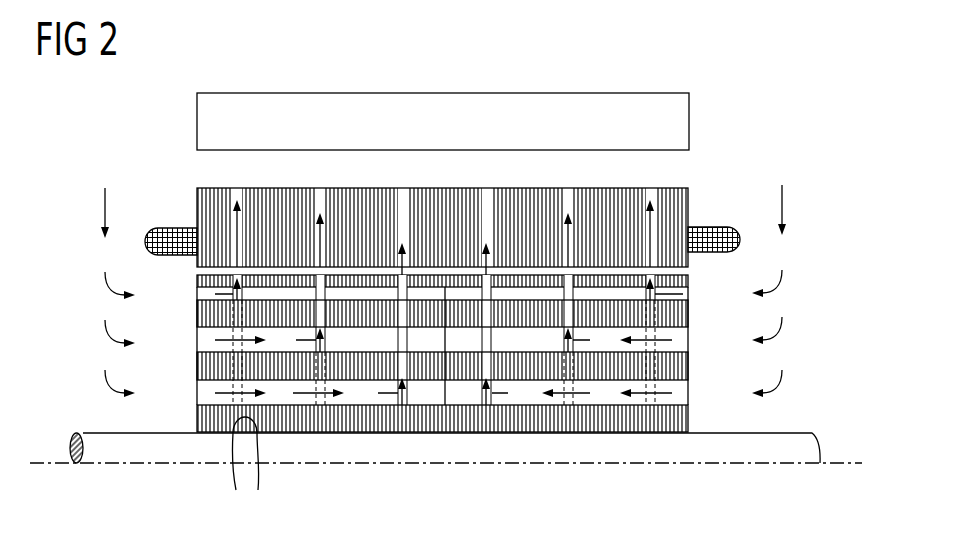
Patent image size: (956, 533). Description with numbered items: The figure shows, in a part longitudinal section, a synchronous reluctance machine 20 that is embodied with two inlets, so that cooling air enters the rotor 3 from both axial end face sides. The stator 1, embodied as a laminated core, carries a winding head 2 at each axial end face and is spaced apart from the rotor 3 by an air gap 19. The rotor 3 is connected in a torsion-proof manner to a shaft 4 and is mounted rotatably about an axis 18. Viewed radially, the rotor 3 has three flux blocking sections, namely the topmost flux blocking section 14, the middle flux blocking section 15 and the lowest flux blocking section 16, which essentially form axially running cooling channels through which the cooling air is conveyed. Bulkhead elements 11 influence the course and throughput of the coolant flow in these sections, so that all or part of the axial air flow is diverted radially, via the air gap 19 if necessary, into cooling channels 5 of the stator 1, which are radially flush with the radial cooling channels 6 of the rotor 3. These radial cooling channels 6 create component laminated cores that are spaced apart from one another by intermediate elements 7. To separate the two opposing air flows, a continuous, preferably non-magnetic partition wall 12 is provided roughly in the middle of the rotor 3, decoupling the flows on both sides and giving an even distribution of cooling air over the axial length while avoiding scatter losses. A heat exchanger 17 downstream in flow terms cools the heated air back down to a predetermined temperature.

The stator 1 is at (205, 206).
The winding head 2 is at (180, 248).
The rotor 3 is at (363, 420).
The shaft 4 is at (150, 450).
The cooling channels 5 is at (233, 178).
The radial cooling channels 6 is at (238, 284).
The intermediate elements 7 is at (241, 469).
The bulkhead elements 11 is at (261, 477).
The partition wall 12 is at (448, 422).
The topmost flux blocking section 14 is at (683, 294).
The middle flux blocking section 15 is at (688, 343).
The lowest flux blocking section 16 is at (688, 395).
The heat exchanger 17 is at (513, 92).
The axis 18 is at (845, 462).
The air gap 19 is at (680, 268).
The synchronous reluctance machine 20 is at (648, 74).